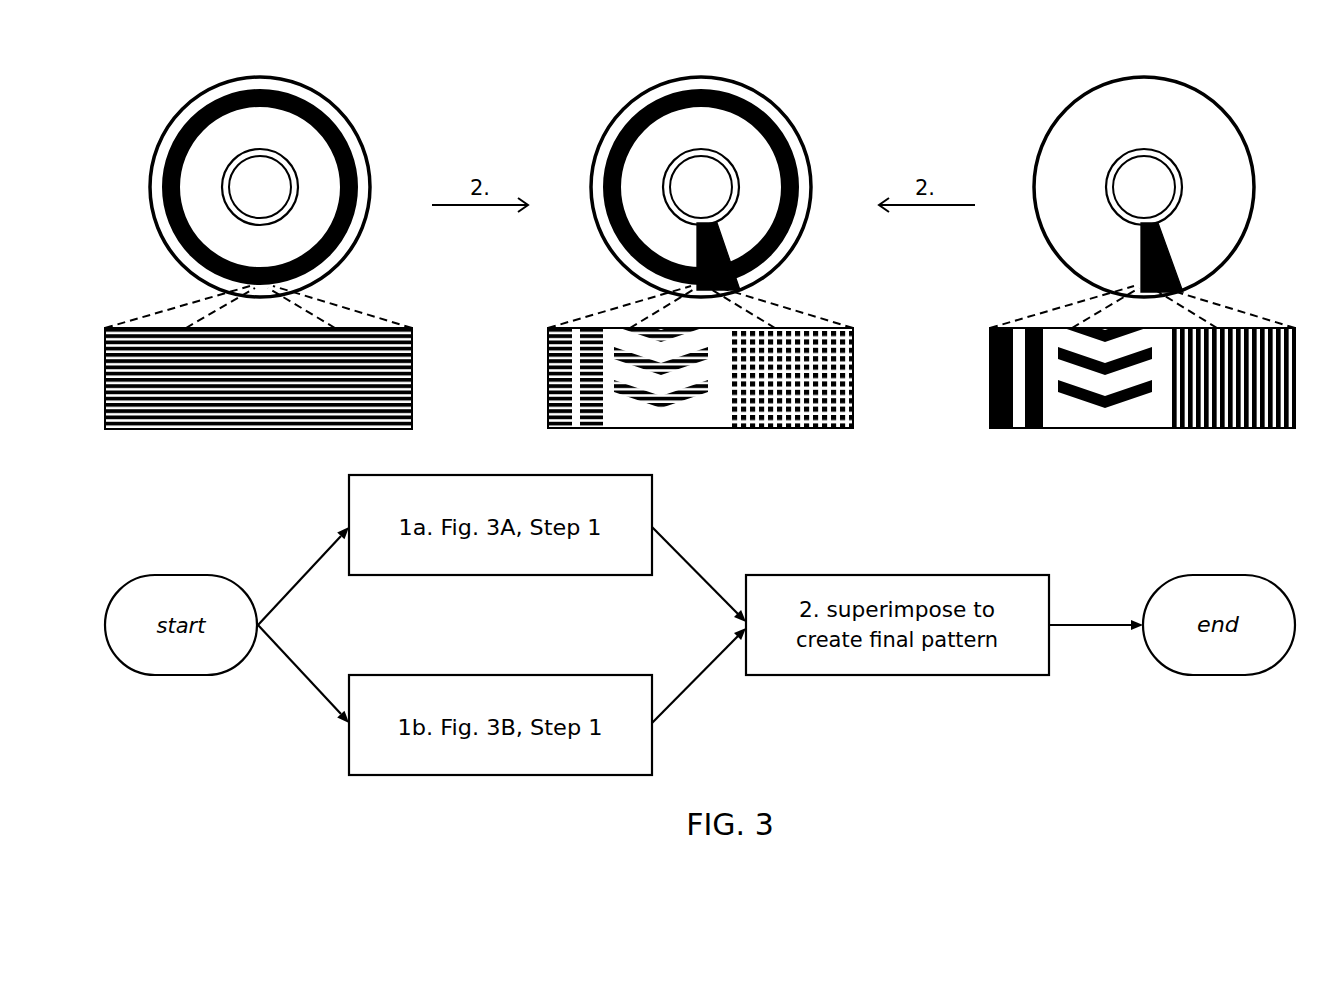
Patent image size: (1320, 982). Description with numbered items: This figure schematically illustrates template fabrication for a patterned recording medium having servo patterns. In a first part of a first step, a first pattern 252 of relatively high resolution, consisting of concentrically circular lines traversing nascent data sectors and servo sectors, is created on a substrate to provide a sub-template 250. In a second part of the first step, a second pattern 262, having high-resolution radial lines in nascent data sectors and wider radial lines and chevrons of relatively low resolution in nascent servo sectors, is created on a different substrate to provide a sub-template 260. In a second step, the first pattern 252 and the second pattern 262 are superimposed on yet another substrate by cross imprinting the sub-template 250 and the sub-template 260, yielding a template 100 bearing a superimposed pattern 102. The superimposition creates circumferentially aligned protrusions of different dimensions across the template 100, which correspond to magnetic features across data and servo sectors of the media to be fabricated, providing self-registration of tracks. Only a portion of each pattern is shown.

The sub-template 250 is at (140, 170).
The first pattern 252 is at (258, 323).
The template 100 is at (581, 170).
The superimposed pattern 102 is at (699, 323).
The sub-template 260 is at (1023, 170).
The second pattern 262 is at (1140, 323).